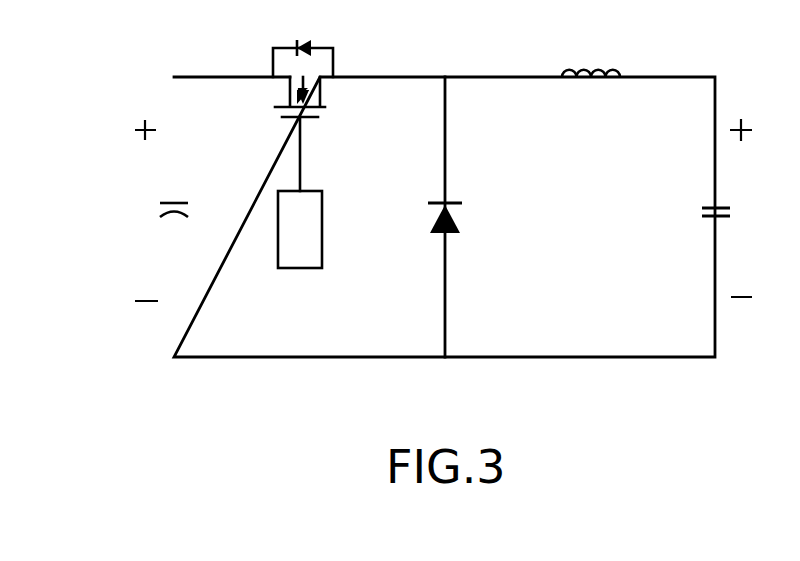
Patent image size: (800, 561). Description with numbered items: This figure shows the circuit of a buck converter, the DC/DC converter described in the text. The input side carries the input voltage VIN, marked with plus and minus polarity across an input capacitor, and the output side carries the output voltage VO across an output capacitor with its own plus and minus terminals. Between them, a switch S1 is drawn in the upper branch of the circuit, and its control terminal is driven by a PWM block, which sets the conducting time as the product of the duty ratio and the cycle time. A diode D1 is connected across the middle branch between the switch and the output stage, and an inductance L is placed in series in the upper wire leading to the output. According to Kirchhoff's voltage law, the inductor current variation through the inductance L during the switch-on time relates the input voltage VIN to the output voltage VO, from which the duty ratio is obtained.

The switch (MOSFET) S1 is at (311, 115).
The diode D1 is at (422, 220).
The inductance L is at (591, 96).
The PWM controller PWM is at (300, 229).
The input voltage VIN is at (147, 210).
The output voltage VO is at (737, 208).